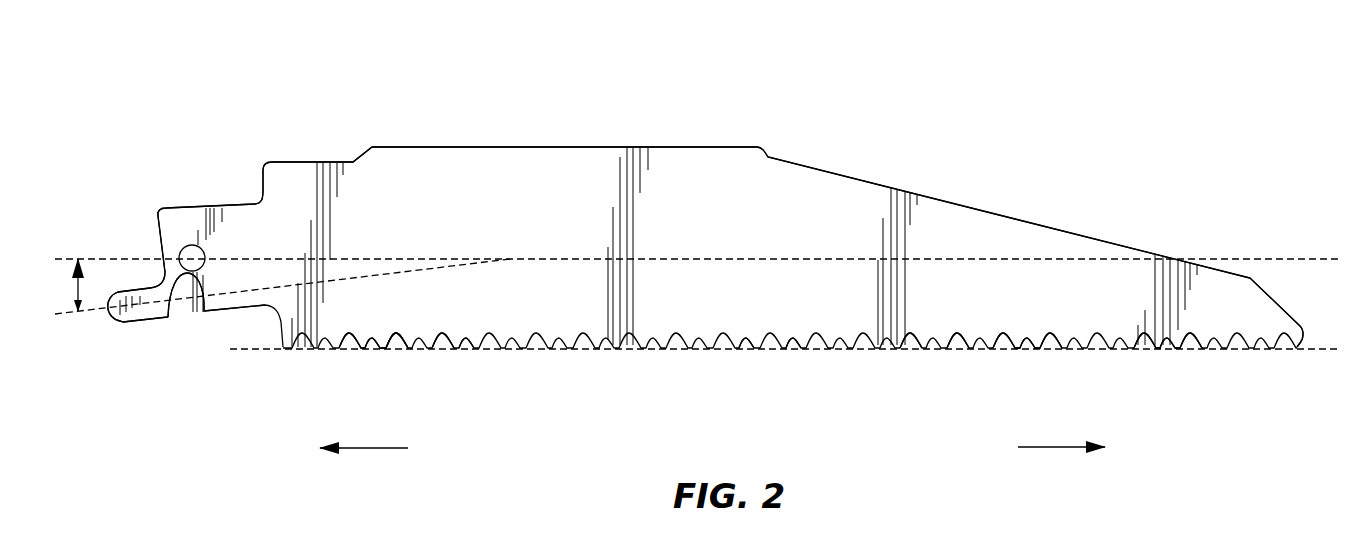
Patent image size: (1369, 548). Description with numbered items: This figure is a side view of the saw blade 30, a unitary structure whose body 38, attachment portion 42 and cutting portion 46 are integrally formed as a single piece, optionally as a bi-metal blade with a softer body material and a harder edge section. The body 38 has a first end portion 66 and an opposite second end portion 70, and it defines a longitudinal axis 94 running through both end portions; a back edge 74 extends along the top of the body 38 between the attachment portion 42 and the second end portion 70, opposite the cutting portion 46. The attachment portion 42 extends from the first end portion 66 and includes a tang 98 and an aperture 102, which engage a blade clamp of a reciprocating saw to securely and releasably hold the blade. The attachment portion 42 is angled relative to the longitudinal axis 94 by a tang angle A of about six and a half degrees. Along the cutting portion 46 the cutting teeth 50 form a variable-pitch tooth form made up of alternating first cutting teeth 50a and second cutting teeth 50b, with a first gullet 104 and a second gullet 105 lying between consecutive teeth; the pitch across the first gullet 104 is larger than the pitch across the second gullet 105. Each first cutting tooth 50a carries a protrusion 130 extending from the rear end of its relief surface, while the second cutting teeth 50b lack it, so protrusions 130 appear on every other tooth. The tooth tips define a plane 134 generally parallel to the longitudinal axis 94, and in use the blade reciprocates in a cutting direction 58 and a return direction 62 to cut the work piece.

The saw blade 30 is at (1103, 105).
The body 38 is at (837, 213).
The attachment portion 42 is at (170, 208).
The cutting portion 46 is at (836, 381).
The cutting teeth 50 is at (1141, 400).
The first cutting teeth 50a is at (1033, 340).
The second cutting teeth 50b is at (363, 335).
The cutting direction 58 is at (367, 450).
The return direction 62 is at (1057, 450).
The first end portion 66 is at (262, 150).
The second end portion 70 is at (1326, 328).
The back edge 74 is at (675, 146).
The longitudinal axis 94 is at (1288, 258).
The tang 98 is at (125, 322).
The aperture 102 is at (168, 317).
The first gullet 104 is at (442, 356).
The second gullet 105 is at (466, 356).
The protrusion 130 is at (392, 352).
The plane 134 is at (1310, 350).
The tang angle A is at (66, 285).